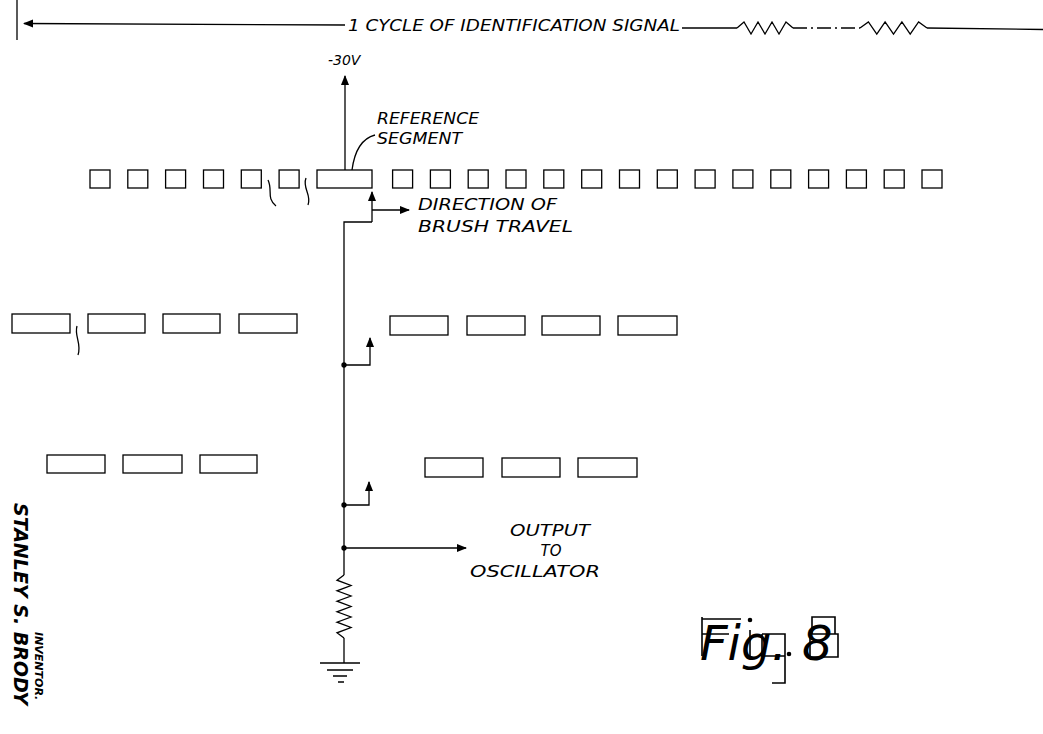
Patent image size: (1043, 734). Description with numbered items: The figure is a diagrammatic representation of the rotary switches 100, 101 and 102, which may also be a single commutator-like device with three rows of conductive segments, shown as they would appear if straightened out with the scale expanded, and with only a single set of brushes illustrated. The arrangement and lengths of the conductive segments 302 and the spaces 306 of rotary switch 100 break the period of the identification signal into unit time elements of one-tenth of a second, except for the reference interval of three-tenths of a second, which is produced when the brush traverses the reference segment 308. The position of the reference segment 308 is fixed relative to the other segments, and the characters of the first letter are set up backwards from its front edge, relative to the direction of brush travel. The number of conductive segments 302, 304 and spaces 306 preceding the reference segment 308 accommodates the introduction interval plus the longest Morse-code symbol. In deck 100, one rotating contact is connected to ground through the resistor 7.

The resistor 7 is at (344, 610).
The rotary switch 100 is at (555, 176).
The rotary switch 101 is at (517, 302).
The rotary switch 102 is at (967, 476).
The conductive segments 302 is at (176, 188).
The conductive segments 304 is at (170, 314).
The spaces 306 is at (188, 276).
The reference segment 308 is at (330, 170).